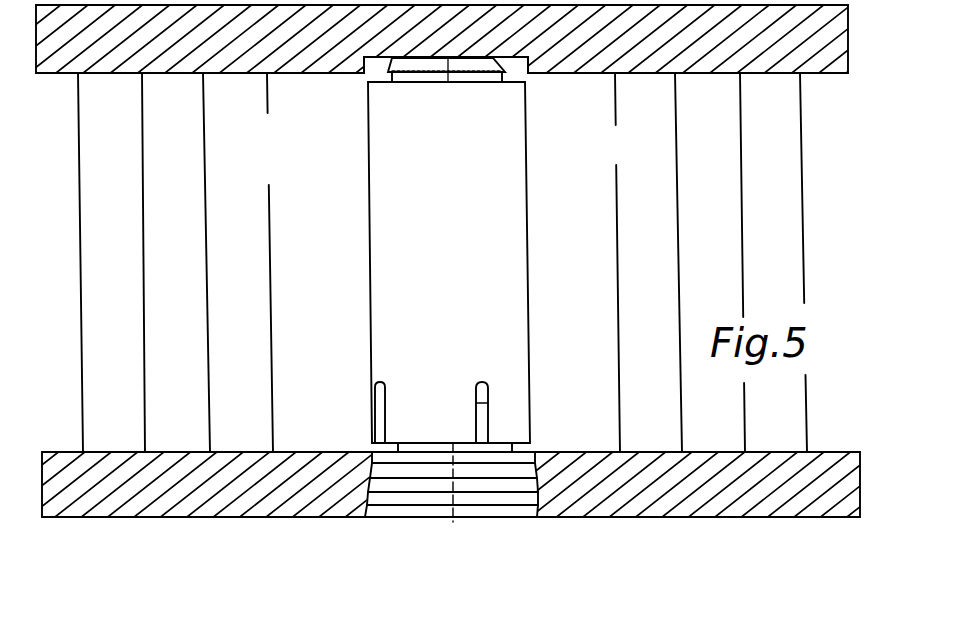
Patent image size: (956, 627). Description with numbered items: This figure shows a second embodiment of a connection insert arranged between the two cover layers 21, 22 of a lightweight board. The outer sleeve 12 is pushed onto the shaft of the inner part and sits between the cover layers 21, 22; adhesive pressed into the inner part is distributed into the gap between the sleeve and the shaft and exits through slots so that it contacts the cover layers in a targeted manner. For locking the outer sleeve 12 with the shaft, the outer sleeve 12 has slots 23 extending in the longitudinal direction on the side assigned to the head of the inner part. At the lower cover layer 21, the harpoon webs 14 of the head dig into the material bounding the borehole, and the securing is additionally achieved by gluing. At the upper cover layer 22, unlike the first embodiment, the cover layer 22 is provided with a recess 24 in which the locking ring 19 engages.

The outer sleeve 12 is at (478, 187).
The harpoon-type webs 14 is at (370, 465).
The locking ring 19 is at (415, 63).
The cover layer 21 is at (170, 487).
The cover layer 22 is at (122, 42).
The slots 23 is at (380, 412).
The recess 24 is at (372, 62).